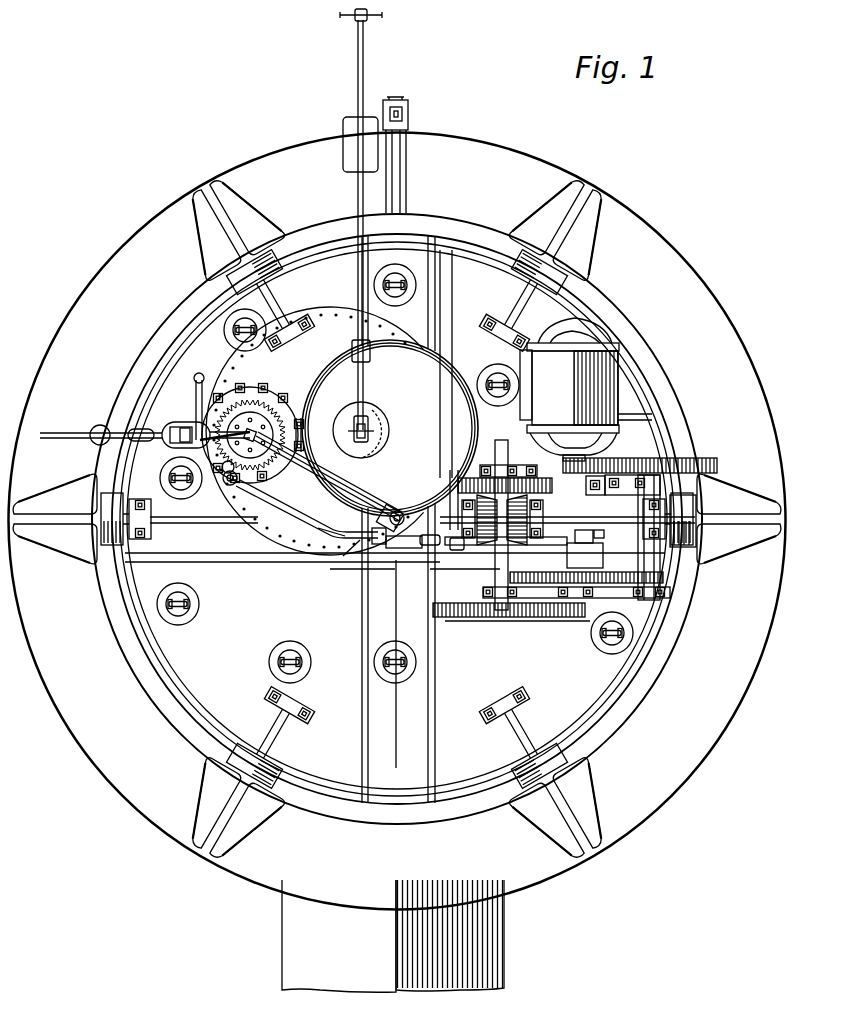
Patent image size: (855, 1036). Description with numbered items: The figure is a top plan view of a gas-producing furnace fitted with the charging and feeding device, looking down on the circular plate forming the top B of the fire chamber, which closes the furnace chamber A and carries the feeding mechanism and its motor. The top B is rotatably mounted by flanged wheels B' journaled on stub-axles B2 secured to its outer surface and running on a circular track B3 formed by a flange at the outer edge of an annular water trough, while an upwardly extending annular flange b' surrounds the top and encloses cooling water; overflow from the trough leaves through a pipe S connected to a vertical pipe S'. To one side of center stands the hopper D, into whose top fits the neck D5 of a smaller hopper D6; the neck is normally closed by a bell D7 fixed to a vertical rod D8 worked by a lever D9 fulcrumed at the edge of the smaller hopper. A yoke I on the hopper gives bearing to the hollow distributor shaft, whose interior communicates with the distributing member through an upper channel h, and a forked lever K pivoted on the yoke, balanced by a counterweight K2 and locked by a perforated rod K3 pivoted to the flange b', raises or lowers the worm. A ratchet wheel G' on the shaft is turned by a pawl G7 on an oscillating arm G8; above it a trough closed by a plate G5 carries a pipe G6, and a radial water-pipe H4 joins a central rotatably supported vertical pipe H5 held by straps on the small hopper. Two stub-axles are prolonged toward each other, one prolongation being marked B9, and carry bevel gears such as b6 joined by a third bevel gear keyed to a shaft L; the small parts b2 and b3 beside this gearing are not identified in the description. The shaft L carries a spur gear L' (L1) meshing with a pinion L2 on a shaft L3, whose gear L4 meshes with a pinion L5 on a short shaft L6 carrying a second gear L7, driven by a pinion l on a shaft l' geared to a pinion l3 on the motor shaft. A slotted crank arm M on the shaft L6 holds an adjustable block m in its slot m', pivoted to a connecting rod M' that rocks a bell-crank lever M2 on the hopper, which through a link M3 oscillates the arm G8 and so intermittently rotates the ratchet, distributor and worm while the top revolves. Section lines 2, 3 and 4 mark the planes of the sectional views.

The furnace chamber A is at (691, 247).
The top of the fire chamber B is at (397, 519).
The flanged wheels B' is at (397, 519).
The stub-axles B2 is at (268, 298).
The circular track B3 is at (305, 233).
The prolonged shaft end B9 is at (583, 490).
The hopper D is at (315, 431).
The neck D5 is at (383, 402).
The smaller hopper D6 is at (390, 428).
The valve or bell D7 is at (380, 416).
The vertical operating rod D8 is at (372, 431).
The operating lever D9 is at (366, 182).
The ratchet wheel G' is at (281, 405).
The plate G5 is at (262, 412).
The pipe G6 is at (205, 430).
The pawl G7 is at (304, 502).
The oscillating arm G8 is at (225, 520).
The radially extending water-pipe H4 is at (328, 476).
The vertical feed pipe H5 is at (400, 510).
The yoke I is at (257, 434).
The forked lever K is at (145, 463).
The counterweight K2 is at (100, 425).
The vertical rod K3 is at (140, 432).
The upper channel h is at (180, 426).
The shaft L is at (491, 492).
The spur gear L' is at (525, 520).
The spur gear L1 is at (586, 389).
The pinion L2 is at (655, 468).
The shaft L3 is at (490, 555).
The gear L4 is at (512, 618).
The pinion L5 is at (580, 600).
The short shaft L6 is at (585, 600).
The second gear L7 is at (620, 580).
The pinion l is at (705, 548).
The shaft l' is at (721, 559).
The pinion l3 is at (585, 468).
The block m is at (567, 506).
The slot m' is at (603, 524).
The slotted crank arm M is at (592, 549).
The connecting rod M' is at (506, 551).
The bell-crank lever M2 is at (380, 548).
The link M3 is at (318, 530).
The overflow pipe S is at (416, 159).
The vertical pipe S' is at (408, 108).
The upwardly extending annular flange b' is at (496, 339).
The pin b2 is at (421, 557).
The pin b3 is at (458, 559).
The beveled gear b6 is at (600, 490).
The section line 2 is at (92, 597).
The section line 3 is at (350, 68).
The section line 4 is at (39, 422).